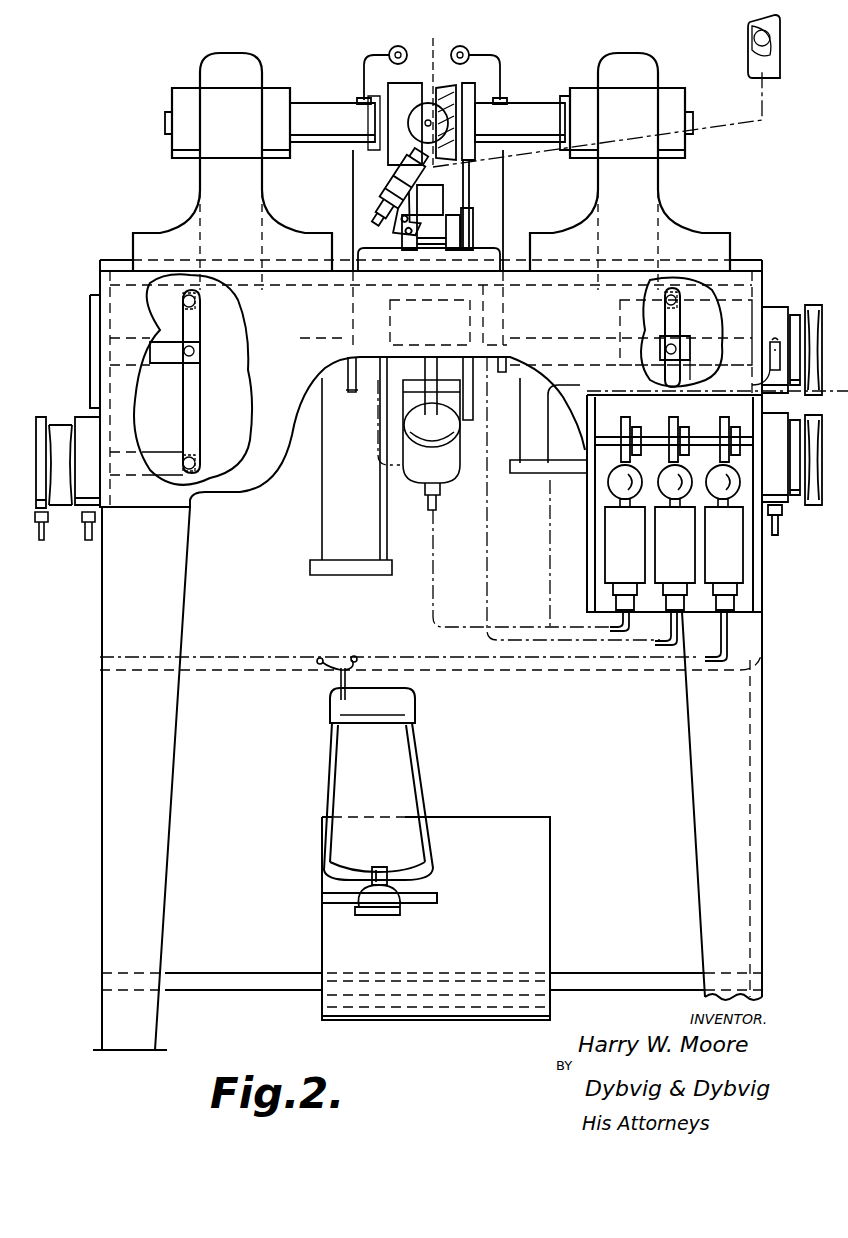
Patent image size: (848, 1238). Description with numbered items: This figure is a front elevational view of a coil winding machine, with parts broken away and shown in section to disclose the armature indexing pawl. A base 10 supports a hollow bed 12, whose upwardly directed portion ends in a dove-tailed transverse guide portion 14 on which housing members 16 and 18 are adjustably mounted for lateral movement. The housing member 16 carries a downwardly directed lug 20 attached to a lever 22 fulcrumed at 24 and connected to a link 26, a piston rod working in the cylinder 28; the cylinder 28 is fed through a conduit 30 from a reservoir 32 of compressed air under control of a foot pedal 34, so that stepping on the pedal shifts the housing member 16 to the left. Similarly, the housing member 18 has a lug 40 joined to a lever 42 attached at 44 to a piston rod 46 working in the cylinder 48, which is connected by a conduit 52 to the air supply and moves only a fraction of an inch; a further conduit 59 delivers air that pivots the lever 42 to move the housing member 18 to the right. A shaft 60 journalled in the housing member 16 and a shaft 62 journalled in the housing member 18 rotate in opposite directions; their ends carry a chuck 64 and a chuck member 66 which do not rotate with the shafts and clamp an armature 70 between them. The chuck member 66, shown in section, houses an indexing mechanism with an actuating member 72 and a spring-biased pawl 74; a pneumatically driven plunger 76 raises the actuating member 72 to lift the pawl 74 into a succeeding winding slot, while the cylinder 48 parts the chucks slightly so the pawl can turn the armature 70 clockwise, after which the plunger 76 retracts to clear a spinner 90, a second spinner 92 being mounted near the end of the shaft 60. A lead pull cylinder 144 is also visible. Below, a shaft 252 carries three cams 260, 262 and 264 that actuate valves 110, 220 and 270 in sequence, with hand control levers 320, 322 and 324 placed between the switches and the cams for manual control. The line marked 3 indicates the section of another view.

The section line 3- 3 is at (443, 46).
The base 10 is at (758, 762).
The hollow bed 12 is at (102, 279).
The dove-tailed transverse guide portion 14 is at (112, 262).
The housing member 16 is at (210, 75).
The housing member 18 is at (644, 76).
The downwardly directed lug 20 is at (196, 303).
The lever 22 is at (196, 394).
The fulcrum 24 is at (196, 356).
The link 26 is at (165, 462).
The cylinder 28 is at (66, 428).
The conduit 30 is at (42, 536).
The reservoir 32 is at (412, 712).
The foot pedal 34 is at (386, 905).
The downwardly projecting lug 40 is at (678, 296).
The lever 42 is at (665, 325).
The pivot 44 is at (676, 348).
The piston rod 46 is at (696, 372).
The cylinder 48 is at (784, 300).
The conduit 52 is at (770, 358).
The conduit 59 is at (790, 505).
The shaft 60 is at (165, 122).
The shaft 62 is at (693, 122).
The chuck 64 is at (412, 96).
The chuck member 66 is at (446, 88).
The armature 70 is at (416, 122).
The actuating member 72 is at (488, 116).
The pawl 74 is at (468, 92).
The plunger 76 is at (468, 202).
The spinner 90 is at (500, 64).
The spinner 92 is at (362, 64).
The valve 110 is at (630, 522).
The lead pull cylinder 144 is at (390, 192).
The valve 220 is at (680, 526).
The shaft 252 is at (708, 440).
The cam 260 is at (636, 412).
The cam 262 is at (684, 412).
The cam 264 is at (738, 412).
The valve 270 is at (738, 552).
The hand control lever 320 is at (628, 484).
The hand control lever 322 is at (678, 484).
The hand control lever 324 is at (726, 484).